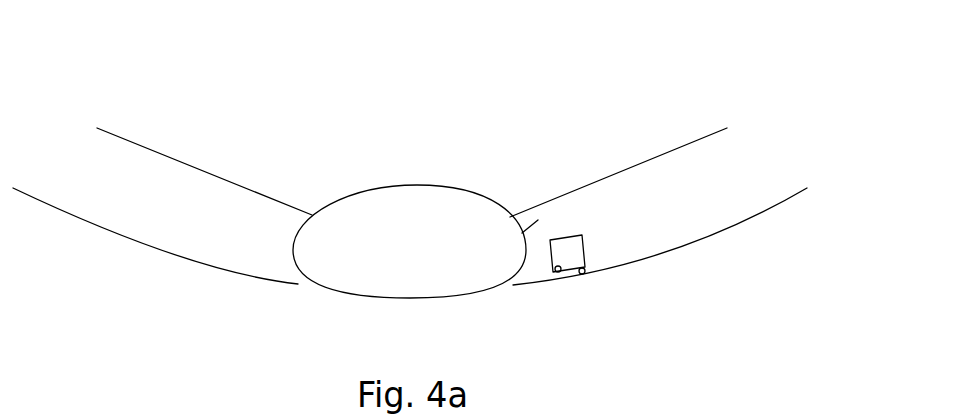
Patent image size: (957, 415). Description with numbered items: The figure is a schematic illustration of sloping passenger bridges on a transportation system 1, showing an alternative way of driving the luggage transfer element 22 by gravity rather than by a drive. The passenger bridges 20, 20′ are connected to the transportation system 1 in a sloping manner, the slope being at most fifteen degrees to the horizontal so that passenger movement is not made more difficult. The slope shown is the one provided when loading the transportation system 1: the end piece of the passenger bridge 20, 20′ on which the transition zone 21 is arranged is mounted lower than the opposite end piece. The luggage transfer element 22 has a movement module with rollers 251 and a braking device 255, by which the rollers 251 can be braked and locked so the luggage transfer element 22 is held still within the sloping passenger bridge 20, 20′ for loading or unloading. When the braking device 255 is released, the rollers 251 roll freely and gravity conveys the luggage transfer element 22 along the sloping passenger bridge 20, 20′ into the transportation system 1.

The passenger bridge 20′ is at (180, 163).
The passenger bridge 20 is at (642, 161).
The transportation system 1 is at (417, 184).
The transition zone 21 is at (536, 229).
The luggage transfer element 22 is at (566, 244).
The braking device 255 is at (554, 270).
The rollers 251 is at (557, 278).